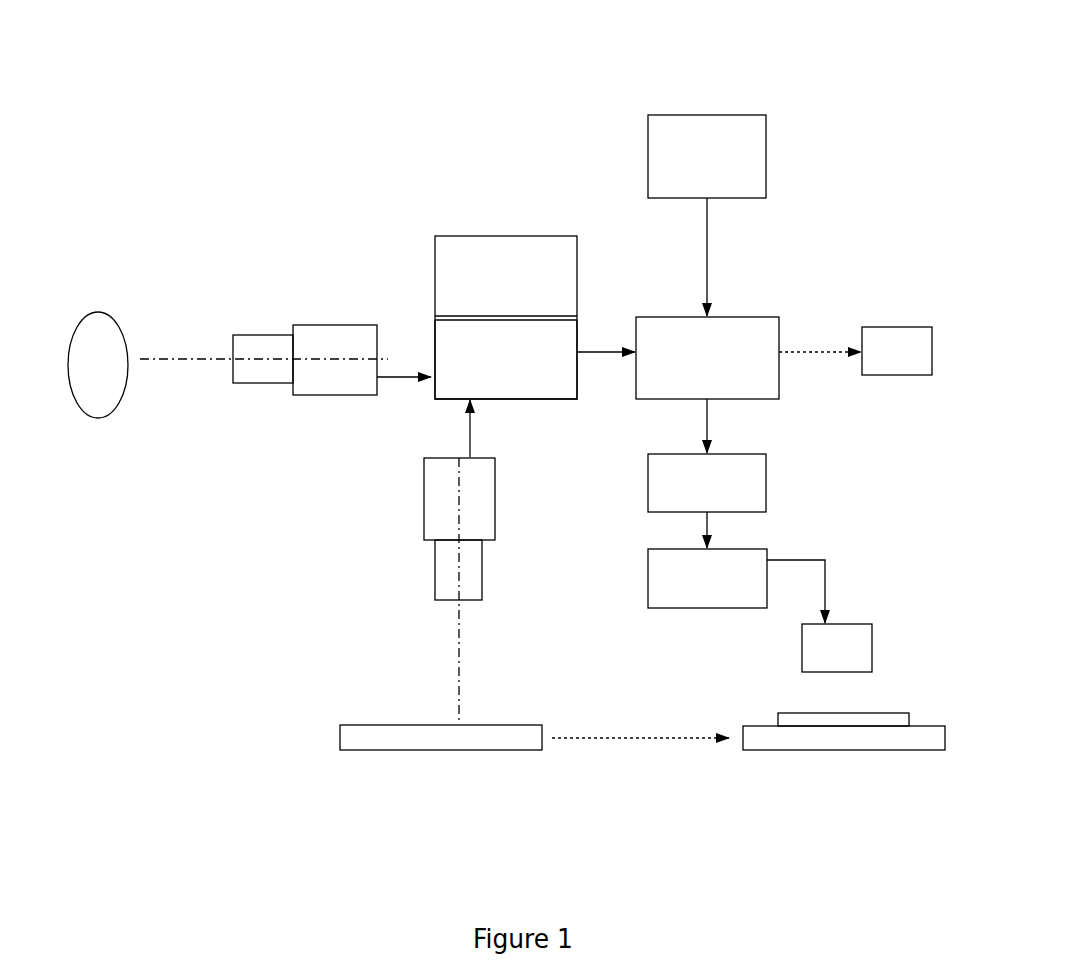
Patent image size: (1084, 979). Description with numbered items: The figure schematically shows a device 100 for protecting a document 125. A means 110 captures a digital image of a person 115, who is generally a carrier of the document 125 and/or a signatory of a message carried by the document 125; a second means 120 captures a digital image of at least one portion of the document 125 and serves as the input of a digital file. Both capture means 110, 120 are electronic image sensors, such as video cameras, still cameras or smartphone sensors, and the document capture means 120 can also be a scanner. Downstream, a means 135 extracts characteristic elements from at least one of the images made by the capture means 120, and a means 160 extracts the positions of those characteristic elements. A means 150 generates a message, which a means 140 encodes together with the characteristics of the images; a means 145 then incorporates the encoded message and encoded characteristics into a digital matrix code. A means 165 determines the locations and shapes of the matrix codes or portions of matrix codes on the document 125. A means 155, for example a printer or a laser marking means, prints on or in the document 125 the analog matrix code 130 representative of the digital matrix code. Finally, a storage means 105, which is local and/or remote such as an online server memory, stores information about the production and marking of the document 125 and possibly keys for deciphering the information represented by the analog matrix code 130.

The device for protecting a document 100 is at (400, 123).
The storage means 105 is at (884, 335).
The means for capturing a digital image of a person 110 is at (317, 335).
The person 115 is at (104, 325).
The means for capturing a digital image of at least one portion of the document 120 is at (447, 505).
The document 125 is at (352, 740).
The analog matrix code 130 is at (813, 720).
The means for extracting characteristic elements 135 is at (517, 383).
The means for encoding the message and characteristics of images 140 is at (767, 327).
The means for incorporating the encoded message and encoded characteristics in a dig 145 is at (755, 477).
The means for generating a message 150 is at (695, 128).
The means for printing the analog matrix code 155 is at (814, 643).
The means for extracting positions of the characteristic elements 160 is at (483, 242).
The means for determining locations and shapes of matrix codes 165 is at (660, 585).